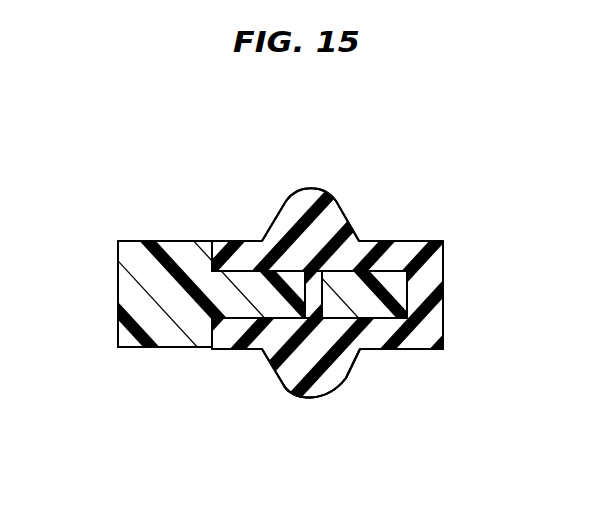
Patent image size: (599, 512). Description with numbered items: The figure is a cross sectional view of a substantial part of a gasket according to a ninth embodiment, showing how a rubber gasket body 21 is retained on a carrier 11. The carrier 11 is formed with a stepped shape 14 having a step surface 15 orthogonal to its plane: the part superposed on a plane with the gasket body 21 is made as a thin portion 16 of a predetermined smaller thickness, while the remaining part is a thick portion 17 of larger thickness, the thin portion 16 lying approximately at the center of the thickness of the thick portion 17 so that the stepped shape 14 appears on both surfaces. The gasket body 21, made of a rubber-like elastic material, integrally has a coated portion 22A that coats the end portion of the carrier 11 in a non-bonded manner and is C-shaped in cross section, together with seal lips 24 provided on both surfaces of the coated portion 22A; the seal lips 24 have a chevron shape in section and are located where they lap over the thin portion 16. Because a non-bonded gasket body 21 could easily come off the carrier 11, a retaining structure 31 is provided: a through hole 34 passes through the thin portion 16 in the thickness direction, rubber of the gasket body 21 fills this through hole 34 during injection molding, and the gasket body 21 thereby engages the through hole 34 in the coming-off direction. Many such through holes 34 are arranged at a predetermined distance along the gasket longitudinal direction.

The carrier 11 is at (135, 252).
The stepped shape 14 is at (234, 241).
The step surface 15 is at (220, 243).
The thin portion 16 is at (397, 295).
The thick portion 17 is at (133, 288).
The gasket body 21 is at (433, 282).
The coated portion 22A is at (398, 254).
The seal lips 24 is at (310, 200).
The retaining structure 31 is at (318, 256).
The through hole 34 is at (348, 368).